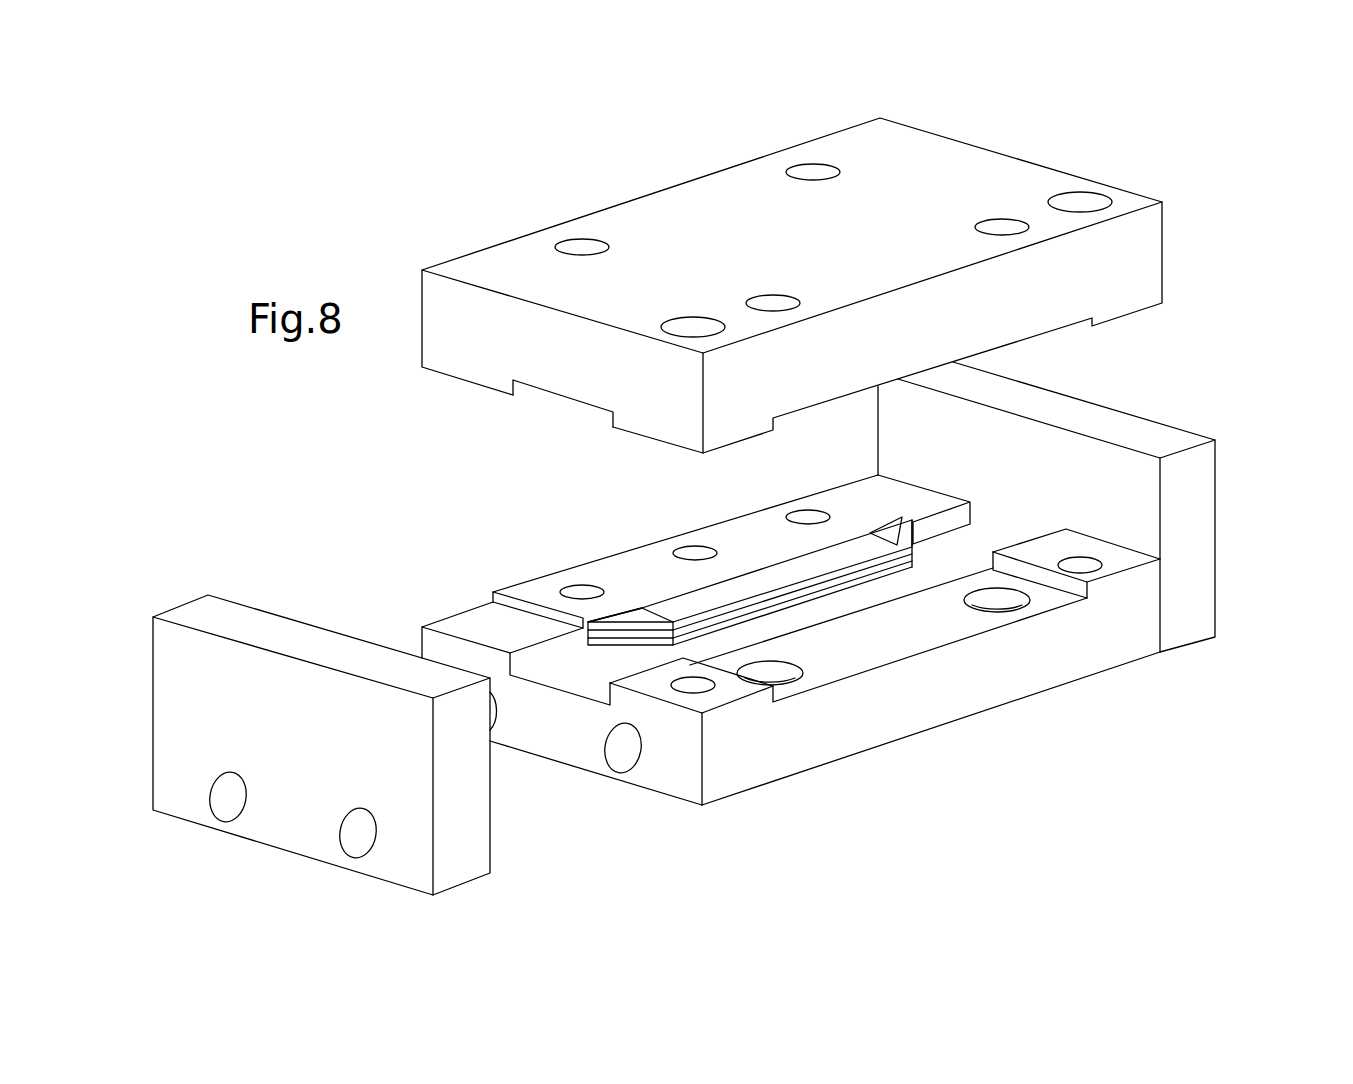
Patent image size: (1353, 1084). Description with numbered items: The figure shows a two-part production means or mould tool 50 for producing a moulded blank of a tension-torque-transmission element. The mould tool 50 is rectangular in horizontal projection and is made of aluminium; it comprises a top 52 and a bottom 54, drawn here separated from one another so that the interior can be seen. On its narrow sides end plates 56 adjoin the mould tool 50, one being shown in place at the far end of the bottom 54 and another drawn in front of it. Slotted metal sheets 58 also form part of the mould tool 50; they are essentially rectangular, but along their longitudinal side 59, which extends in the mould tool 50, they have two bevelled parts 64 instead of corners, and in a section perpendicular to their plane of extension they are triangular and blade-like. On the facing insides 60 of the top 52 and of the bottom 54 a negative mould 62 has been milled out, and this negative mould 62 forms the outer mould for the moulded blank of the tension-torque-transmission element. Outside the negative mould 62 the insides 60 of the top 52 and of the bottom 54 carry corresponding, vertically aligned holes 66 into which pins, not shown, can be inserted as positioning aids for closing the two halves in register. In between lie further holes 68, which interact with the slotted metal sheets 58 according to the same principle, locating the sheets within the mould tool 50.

The mould tool 50 is at (1217, 318).
The top 52 is at (700, 195).
The bottom 54 is at (990, 698).
The end plates 56 is at (1202, 492).
The slotted metal sheets 58 is at (518, 590).
The longitudinal side 59 is at (795, 580).
The insides 60 is at (458, 380).
The negative mould 62 is at (572, 405).
The bevelled parts 64 is at (897, 530).
The holes 66 is at (693, 322).
The further holes 68 is at (586, 240).